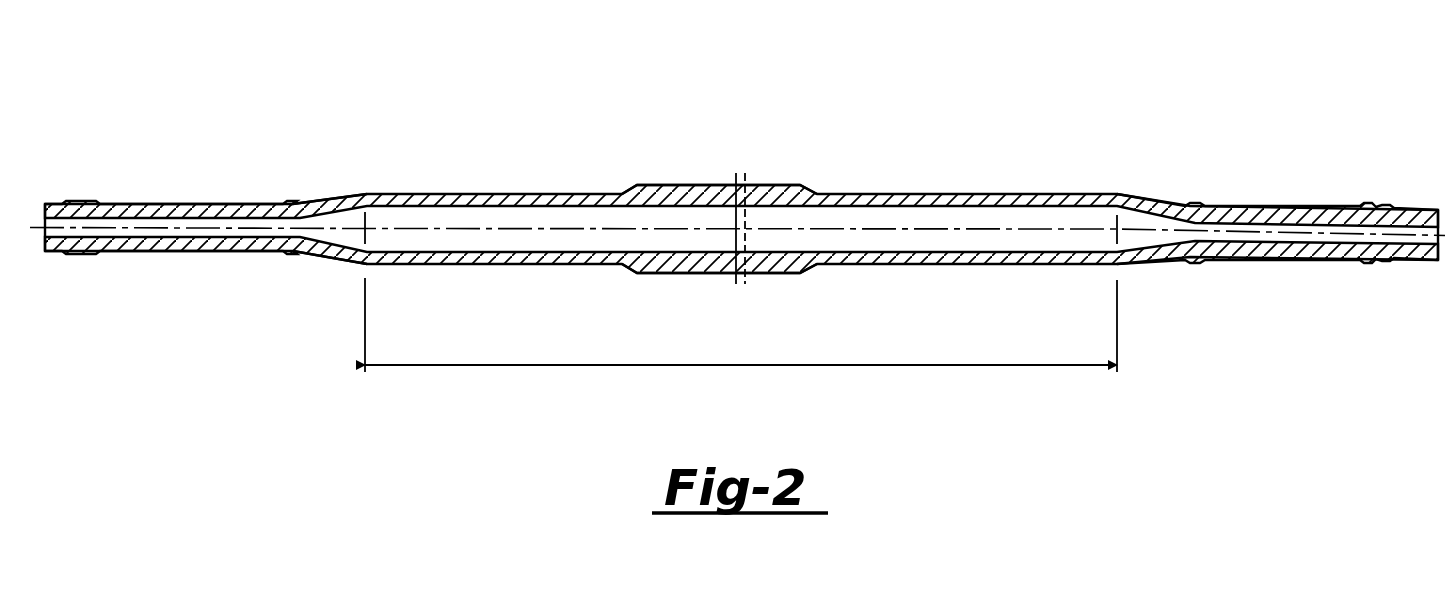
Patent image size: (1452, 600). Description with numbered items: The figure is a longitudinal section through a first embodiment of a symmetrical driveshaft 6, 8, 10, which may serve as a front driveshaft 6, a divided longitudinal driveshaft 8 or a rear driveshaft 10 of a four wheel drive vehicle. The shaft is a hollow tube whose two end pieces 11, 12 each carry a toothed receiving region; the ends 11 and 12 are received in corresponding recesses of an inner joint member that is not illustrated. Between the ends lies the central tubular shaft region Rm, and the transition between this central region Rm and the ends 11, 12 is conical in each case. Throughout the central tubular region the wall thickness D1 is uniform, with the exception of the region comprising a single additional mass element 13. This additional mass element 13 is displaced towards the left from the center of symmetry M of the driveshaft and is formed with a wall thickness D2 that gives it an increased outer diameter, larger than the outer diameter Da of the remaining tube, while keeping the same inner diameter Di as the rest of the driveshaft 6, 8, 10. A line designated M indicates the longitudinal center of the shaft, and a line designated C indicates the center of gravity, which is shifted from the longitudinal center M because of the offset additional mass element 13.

The front driveshafts 6 is at (741, 163).
The divided longitudinal driveshaft 8 is at (741, 163).
The rear driveshafts 10 is at (741, 163).
The end piece 11 is at (150, 210).
The end piece 12 is at (1292, 210).
The additional mass element 13 is at (708, 192).
The outer diameter Da is at (432, 297).
The inner diameter Di is at (533, 252).
The wall thickness D1 is at (910, 194).
The wall thickness D2 is at (682, 185).
The longitudinal center M is at (745, 178).
The center of gravity C is at (736, 283).
The central tubular region Rm is at (741, 292).